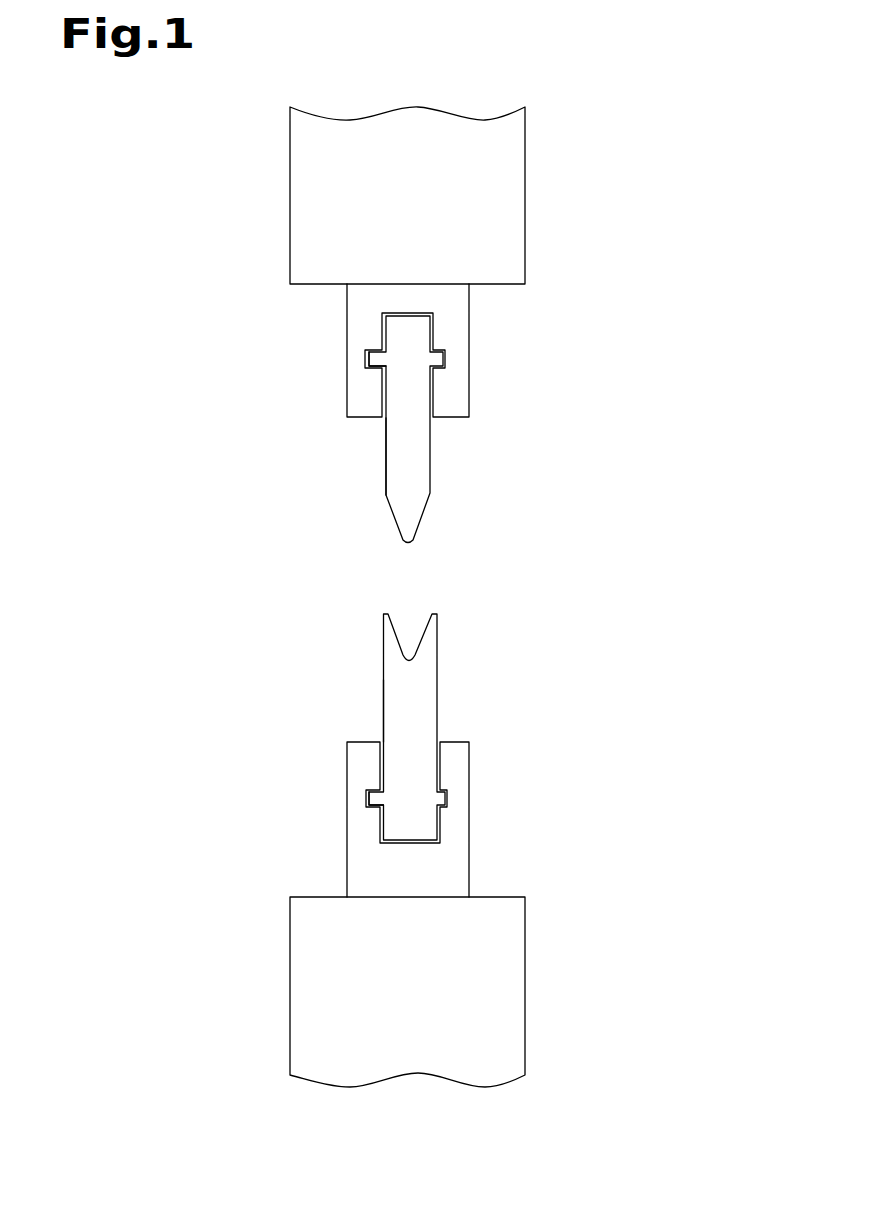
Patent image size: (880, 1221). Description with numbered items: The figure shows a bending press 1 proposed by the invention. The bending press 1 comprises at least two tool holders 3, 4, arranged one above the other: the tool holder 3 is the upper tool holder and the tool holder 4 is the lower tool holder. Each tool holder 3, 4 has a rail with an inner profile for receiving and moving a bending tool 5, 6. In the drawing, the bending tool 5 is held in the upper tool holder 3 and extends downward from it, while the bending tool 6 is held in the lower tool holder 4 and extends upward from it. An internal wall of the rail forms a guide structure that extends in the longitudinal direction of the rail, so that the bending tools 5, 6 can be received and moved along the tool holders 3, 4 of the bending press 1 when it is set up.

The bending press 1 is at (622, 127).
The upper tool holder 3 is at (470, 336).
The lower tool holder 4 is at (470, 827).
The bending tool 5 is at (431, 486).
The bending tool 6 is at (437, 680).